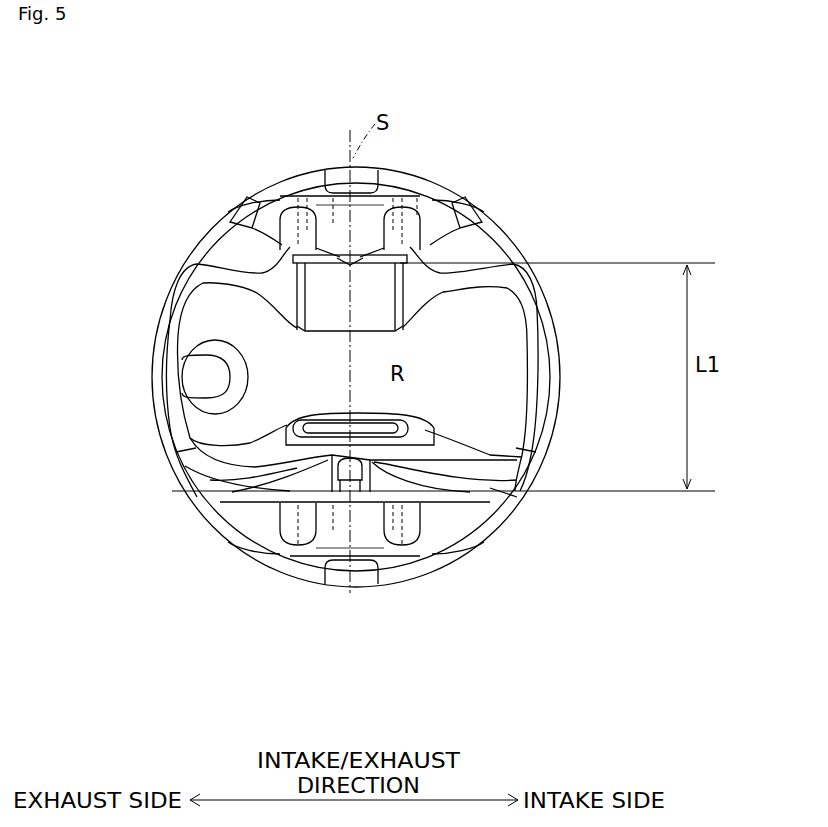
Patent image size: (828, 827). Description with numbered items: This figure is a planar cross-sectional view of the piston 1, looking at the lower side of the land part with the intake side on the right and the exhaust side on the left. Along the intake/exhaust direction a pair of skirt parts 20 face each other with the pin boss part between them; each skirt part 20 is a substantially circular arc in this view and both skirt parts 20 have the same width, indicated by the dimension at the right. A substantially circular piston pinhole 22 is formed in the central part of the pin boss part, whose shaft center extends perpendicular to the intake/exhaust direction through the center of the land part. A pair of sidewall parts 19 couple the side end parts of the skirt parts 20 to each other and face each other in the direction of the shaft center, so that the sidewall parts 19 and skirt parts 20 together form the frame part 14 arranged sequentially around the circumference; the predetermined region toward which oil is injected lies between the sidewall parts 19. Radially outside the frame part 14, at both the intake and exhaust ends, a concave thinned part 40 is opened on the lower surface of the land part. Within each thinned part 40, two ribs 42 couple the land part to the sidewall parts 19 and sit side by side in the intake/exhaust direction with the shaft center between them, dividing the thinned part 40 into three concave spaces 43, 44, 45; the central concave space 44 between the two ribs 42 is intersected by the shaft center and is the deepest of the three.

The piston 1 is at (199, 185).
The frame part 14 is at (364, 377).
The sidewall parts 19 is at (462, 242).
The skirt parts 20 is at (153, 350).
The piston pinhole 22 is at (403, 325).
The thinned part 40 is at (445, 70).
The ribs 42 is at (292, 205).
The concave space 43 is at (245, 238).
The central concave space 44 is at (333, 217).
The concave space 45 is at (434, 232).